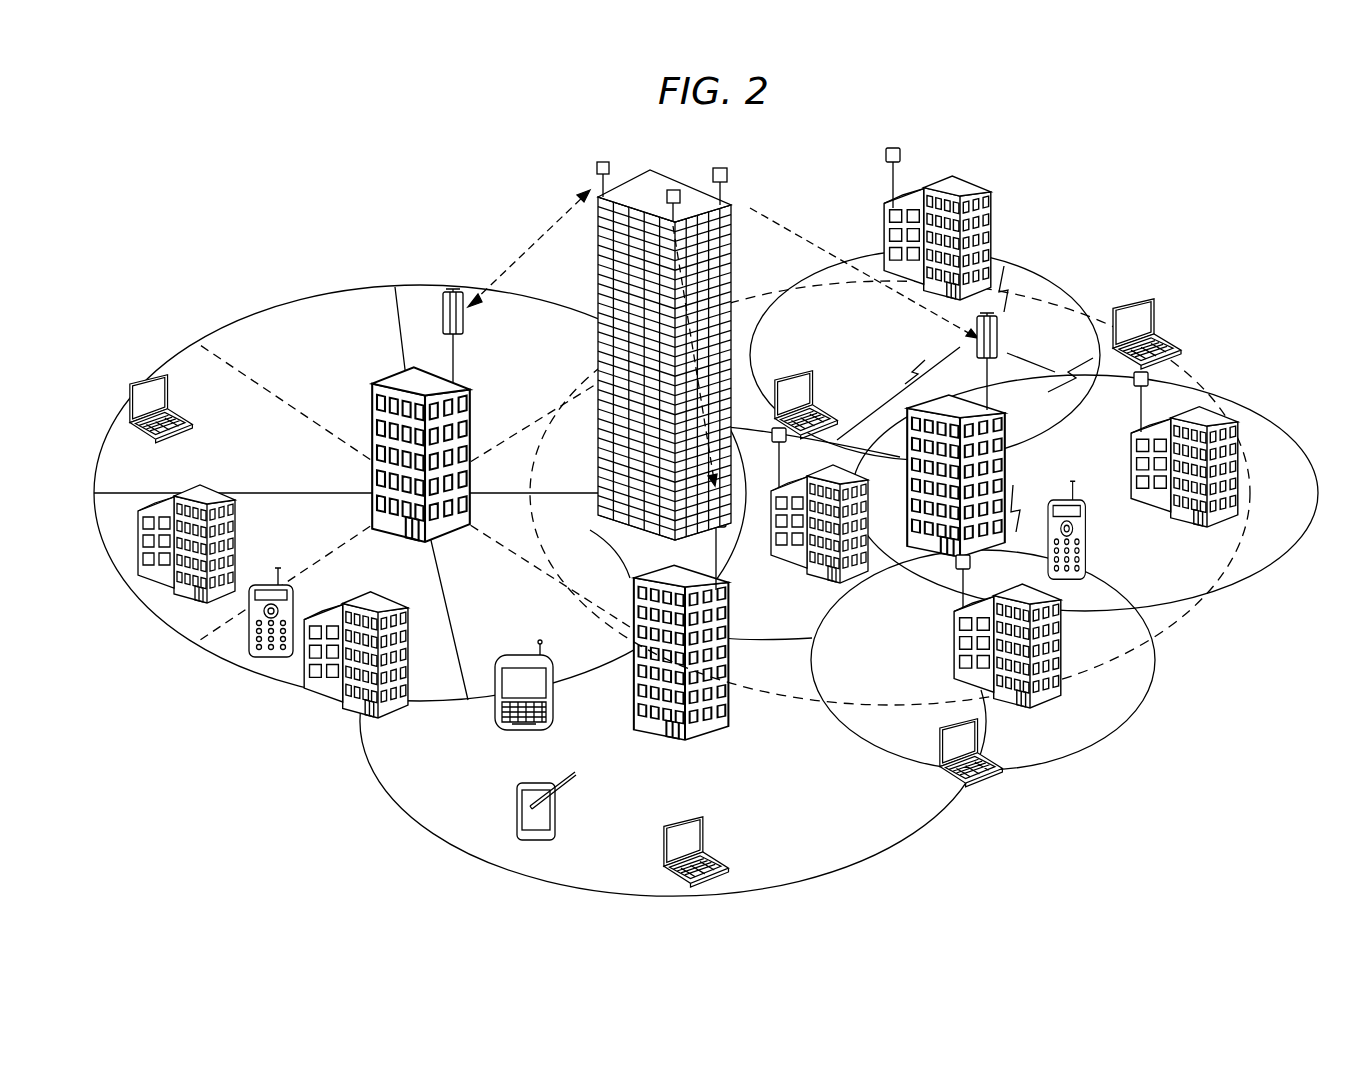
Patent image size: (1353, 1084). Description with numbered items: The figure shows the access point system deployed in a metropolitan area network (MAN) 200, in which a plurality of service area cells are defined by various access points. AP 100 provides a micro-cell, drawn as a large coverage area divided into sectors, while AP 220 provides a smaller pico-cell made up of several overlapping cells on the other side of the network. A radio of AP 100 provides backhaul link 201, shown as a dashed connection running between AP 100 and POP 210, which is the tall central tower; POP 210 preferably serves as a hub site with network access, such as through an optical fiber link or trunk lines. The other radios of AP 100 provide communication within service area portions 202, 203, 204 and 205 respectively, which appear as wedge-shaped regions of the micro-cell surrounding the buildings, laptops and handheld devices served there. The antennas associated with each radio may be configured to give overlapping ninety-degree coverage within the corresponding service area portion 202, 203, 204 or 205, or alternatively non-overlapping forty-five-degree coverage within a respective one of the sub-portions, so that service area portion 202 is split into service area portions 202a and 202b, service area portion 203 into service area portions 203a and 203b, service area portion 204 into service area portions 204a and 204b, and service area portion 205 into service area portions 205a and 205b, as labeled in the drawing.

The access point (AP) 100 is at (412, 292).
The metropolitan area network (MAN) 200 is at (924, 467).
The backhaul link 201 is at (557, 224).
The service area portion 202 is at (562, 300).
The service area portion 202a is at (525, 355).
The service area portion 202b is at (571, 464).
The service area portion 203 is at (472, 705).
The service area portion 203a is at (571, 539).
The service area portion 203b is at (511, 612).
The service area portion 204 is at (228, 653).
The service area portion 204a is at (391, 574).
The service area portion 204b is at (298, 542).
The service area portion 205 is at (228, 330).
The service area portion 205a is at (281, 464).
The service area portion 205b is at (341, 357).
The POP 210 is at (603, 156).
The access point (AP) 220 is at (1059, 279).